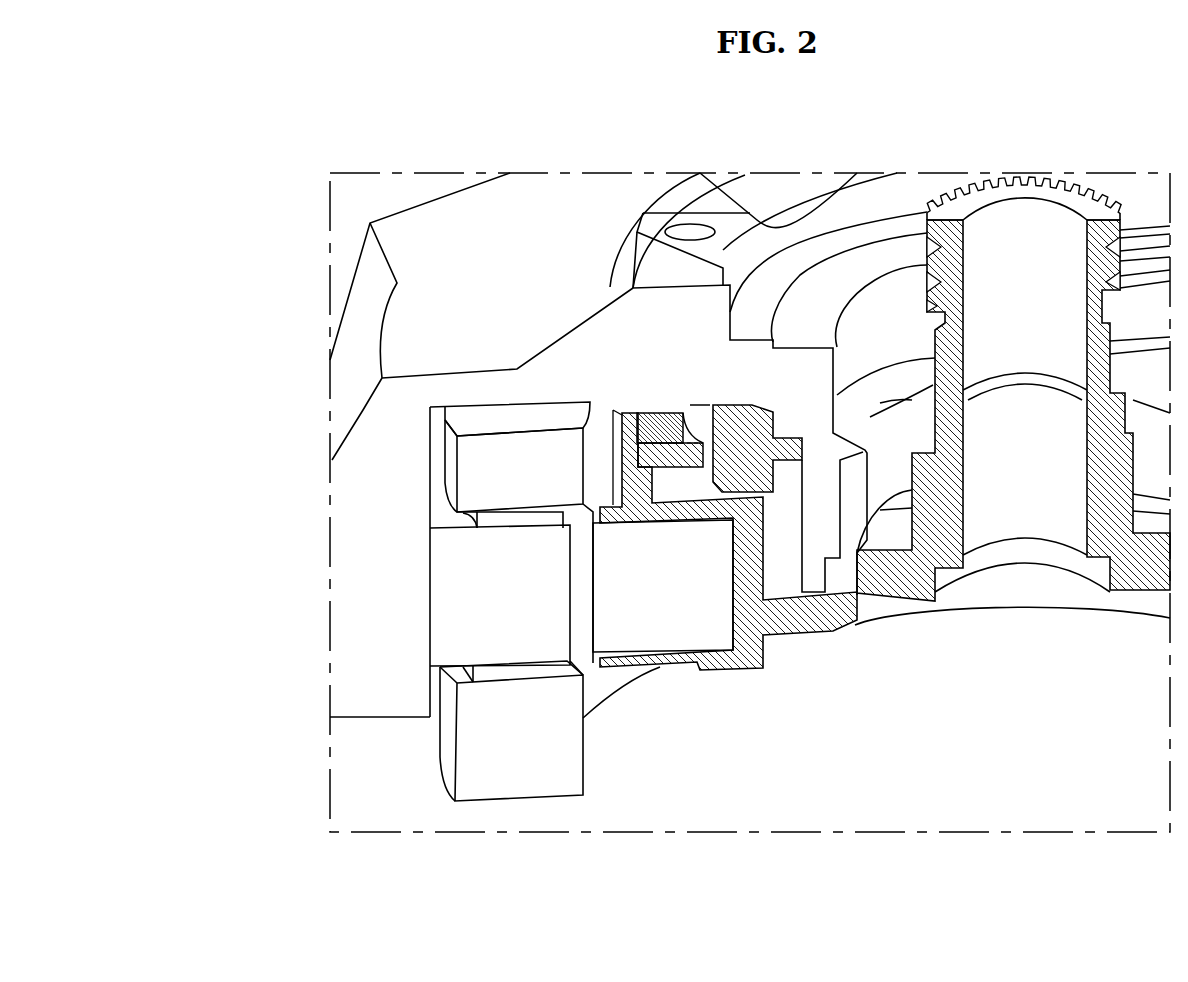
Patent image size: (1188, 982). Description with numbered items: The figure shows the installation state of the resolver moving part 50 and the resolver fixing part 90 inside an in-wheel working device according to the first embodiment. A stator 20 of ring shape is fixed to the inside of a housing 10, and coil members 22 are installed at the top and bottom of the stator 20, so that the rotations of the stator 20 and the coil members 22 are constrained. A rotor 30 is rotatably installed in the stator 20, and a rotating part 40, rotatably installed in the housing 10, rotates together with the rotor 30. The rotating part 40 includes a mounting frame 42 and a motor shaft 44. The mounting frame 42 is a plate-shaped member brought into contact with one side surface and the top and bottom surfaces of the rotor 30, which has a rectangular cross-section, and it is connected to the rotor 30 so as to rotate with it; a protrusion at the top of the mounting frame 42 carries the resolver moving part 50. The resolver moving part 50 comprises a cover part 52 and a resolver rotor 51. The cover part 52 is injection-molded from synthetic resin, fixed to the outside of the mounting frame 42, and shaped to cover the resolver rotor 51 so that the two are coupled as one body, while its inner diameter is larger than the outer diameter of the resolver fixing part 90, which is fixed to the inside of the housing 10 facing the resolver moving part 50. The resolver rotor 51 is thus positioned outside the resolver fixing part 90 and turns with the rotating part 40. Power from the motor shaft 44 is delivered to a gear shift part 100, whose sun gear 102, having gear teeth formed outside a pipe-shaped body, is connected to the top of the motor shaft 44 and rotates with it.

The housing 10 is at (352, 512).
The stator 20 is at (463, 583).
The coil member 22 is at (500, 472).
The rotor 30 is at (660, 617).
The rotating part 40 is at (885, 586).
The mounting frame 42 is at (747, 610).
The motor shaft 44 is at (932, 532).
The resolver moving part 50 is at (626, 261).
The resolver rotor 51 is at (690, 440).
The cover part 52 is at (655, 412).
The resolver fixing part 90 is at (757, 440).
The gear shift part 100 is at (1018, 151).
The sun gear 102 is at (930, 208).